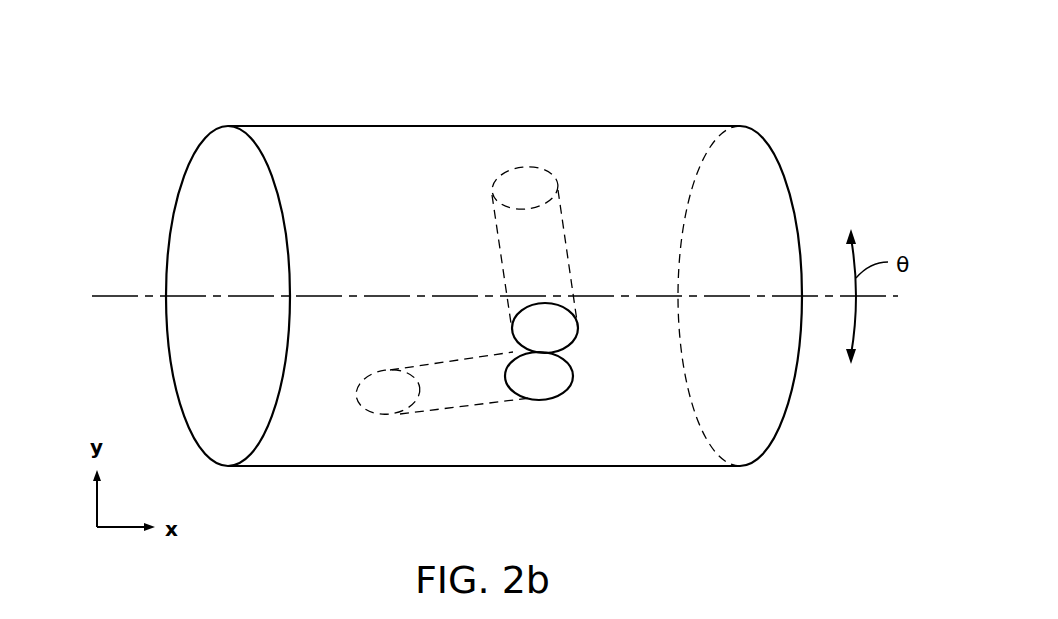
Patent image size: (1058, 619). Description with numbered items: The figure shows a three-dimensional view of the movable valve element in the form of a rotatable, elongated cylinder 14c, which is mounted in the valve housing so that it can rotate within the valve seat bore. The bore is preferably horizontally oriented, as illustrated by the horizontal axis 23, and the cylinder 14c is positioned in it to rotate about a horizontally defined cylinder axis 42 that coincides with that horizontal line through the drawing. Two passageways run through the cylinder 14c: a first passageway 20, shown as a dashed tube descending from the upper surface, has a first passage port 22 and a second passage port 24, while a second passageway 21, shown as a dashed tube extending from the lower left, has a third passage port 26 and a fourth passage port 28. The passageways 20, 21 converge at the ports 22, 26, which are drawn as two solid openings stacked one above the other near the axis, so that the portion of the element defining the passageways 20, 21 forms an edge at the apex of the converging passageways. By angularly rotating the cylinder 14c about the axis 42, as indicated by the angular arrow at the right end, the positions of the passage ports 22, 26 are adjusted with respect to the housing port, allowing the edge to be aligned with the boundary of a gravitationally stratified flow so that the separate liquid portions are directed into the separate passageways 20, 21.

The rotatable elongated cylinder 14c is at (745, 41).
The first passageway 20 is at (540, 240).
The second passageway 21 is at (457, 397).
The first passage port 22 is at (528, 316).
The horizontal axis 23 is at (463, 261).
The cylinder axis 42 is at (133, 293).
The second passage port 24 is at (540, 176).
The third passage port 26 is at (562, 390).
The fourth passage port 28 is at (372, 410).